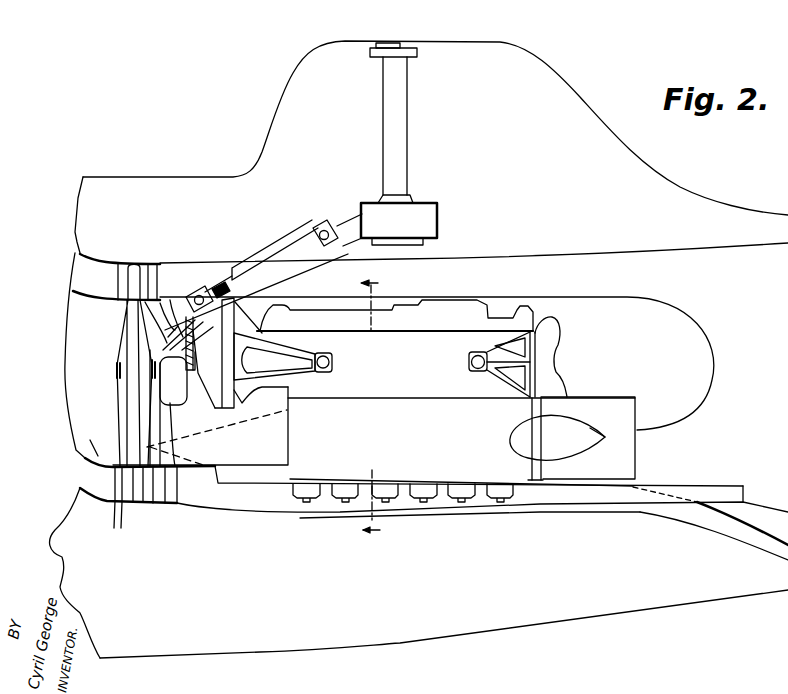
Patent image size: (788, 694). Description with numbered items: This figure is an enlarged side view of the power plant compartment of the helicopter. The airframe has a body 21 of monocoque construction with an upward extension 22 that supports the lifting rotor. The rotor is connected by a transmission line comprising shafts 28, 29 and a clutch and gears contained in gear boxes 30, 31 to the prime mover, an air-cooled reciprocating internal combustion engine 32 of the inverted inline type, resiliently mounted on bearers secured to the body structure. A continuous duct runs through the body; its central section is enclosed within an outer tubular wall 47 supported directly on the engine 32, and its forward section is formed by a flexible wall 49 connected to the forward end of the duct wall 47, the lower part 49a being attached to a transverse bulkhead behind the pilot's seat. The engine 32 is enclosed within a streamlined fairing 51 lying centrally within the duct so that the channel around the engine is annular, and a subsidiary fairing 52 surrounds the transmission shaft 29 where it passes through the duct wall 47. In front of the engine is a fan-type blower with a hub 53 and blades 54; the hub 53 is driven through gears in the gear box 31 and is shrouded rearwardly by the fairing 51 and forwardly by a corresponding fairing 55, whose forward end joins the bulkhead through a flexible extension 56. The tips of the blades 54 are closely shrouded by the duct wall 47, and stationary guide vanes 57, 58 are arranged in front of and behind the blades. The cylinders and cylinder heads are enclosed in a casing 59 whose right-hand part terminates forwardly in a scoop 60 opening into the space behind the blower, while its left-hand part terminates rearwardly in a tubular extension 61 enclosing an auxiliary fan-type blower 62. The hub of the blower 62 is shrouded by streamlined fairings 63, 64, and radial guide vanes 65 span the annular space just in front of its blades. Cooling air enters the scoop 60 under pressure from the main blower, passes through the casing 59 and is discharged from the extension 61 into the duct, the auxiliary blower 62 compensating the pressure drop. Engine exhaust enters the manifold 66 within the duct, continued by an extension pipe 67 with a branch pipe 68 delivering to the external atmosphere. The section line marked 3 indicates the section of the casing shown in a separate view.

The section line 3- 3 is at (375, 408).
The body 21 is at (147, 180).
The upward extension 22 is at (283, 109).
The shaft 28 is at (408, 99).
The shaft 29 is at (297, 250).
The gear box 30 is at (408, 220).
The gear box 31 is at (167, 317).
The internal combustion engine 32 is at (428, 393).
The outer tubular wall 47 is at (478, 258).
The flexible wall 49 is at (86, 256).
The lower part of flexible wall 49a is at (94, 498).
The streamlined fairing 51 is at (657, 273).
The subsidiary fairing 52 is at (305, 272).
The hub 53 is at (137, 382).
The blades 54 is at (135, 264).
The fairing 55 is at (120, 503).
The flexible extension 56 is at (86, 387).
The stationary guide vanes 57 is at (119, 264).
The stationary guide vanes 58 is at (153, 300).
The casing 59 is at (263, 450).
The scoop 60 is at (200, 467).
The tubular extension 61 is at (593, 480).
The auxiliary fan-type blower 62 is at (536, 412).
The streamlined fairing 63 is at (572, 428).
The streamlined fairing 64 is at (512, 424).
The radial guide vanes 65 is at (528, 481).
The manifold 66 is at (285, 504).
The extension pipe 67 is at (712, 488).
The branch pipe 68 is at (765, 538).